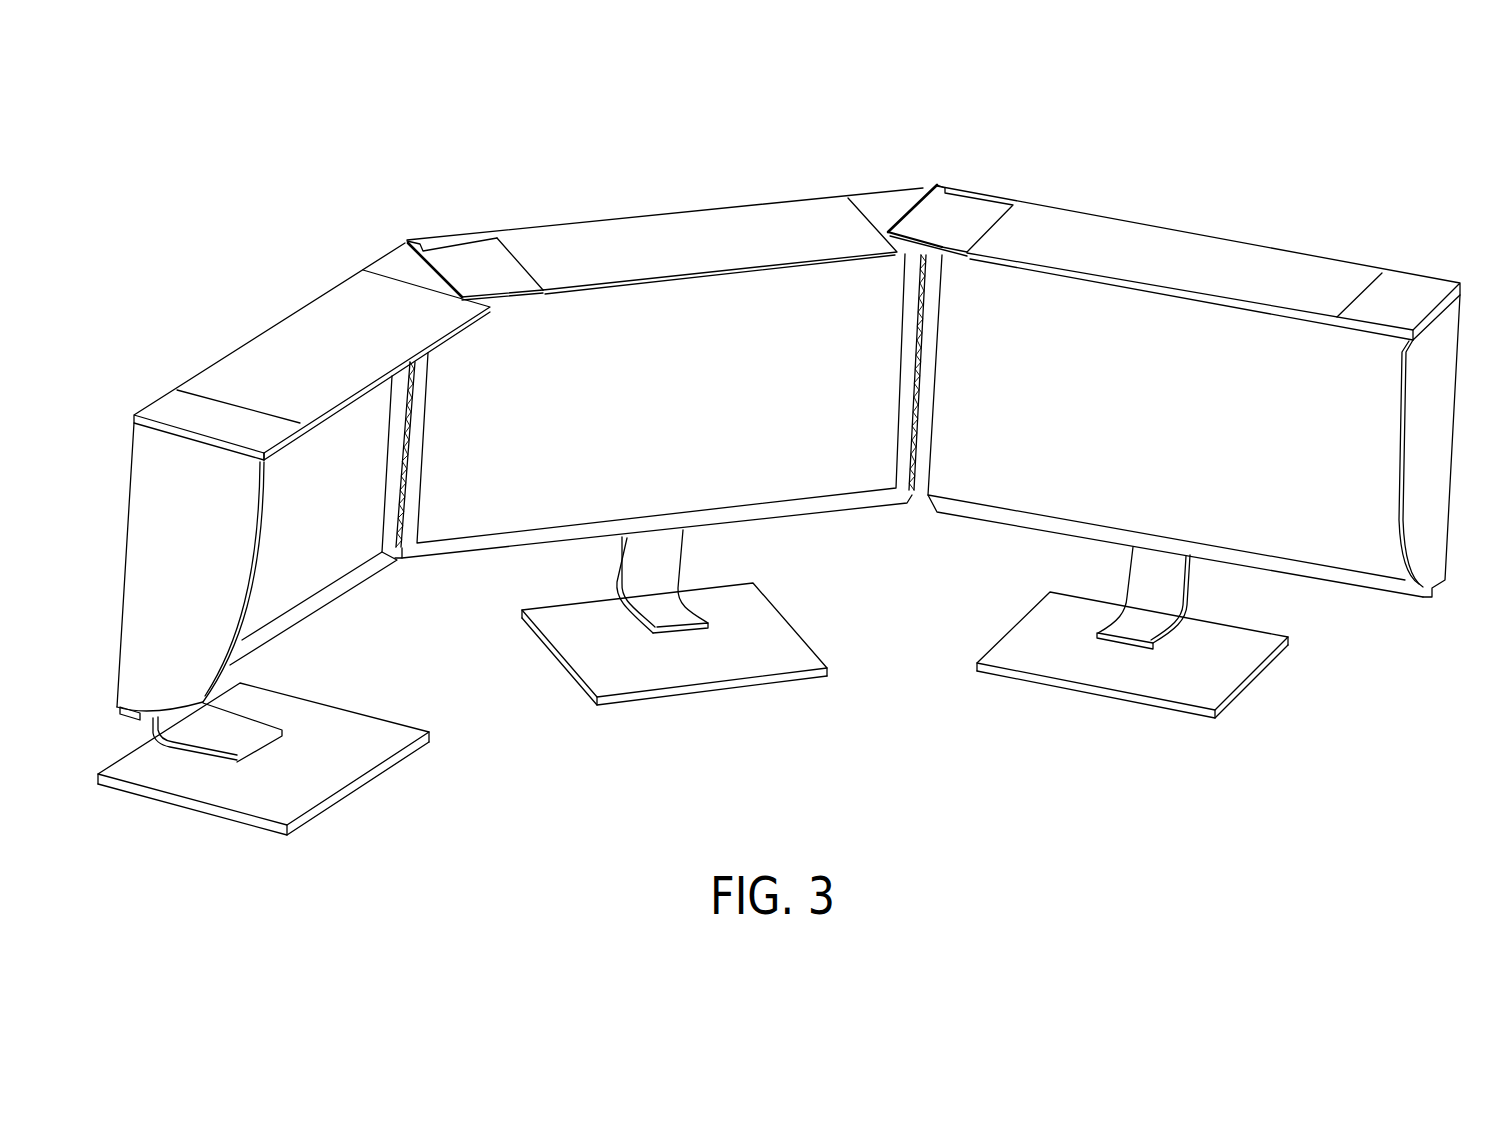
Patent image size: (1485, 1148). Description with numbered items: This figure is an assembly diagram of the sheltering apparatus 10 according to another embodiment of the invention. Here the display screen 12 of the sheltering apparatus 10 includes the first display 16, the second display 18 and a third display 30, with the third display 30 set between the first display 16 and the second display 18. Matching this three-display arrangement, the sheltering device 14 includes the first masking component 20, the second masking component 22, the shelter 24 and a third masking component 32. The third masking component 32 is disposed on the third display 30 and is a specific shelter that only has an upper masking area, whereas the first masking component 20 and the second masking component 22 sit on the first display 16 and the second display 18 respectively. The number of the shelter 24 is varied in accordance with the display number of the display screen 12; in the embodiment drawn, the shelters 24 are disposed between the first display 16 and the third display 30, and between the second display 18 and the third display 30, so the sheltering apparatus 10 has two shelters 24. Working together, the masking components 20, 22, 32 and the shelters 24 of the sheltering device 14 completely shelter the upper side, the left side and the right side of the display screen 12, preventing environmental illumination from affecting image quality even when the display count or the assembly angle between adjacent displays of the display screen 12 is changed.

The sheltering apparatus 10 is at (1378, 165).
The display screen 12 is at (779, 544).
The sheltering device 14 is at (797, 285).
The first display 16 is at (347, 530).
The second display 18 is at (1320, 488).
The third display 30 is at (822, 410).
The first masking component 20 is at (275, 357).
The second masking component 22 is at (1193, 260).
The third masking component 32 is at (687, 233).
The shelter 24 is at (462, 258).